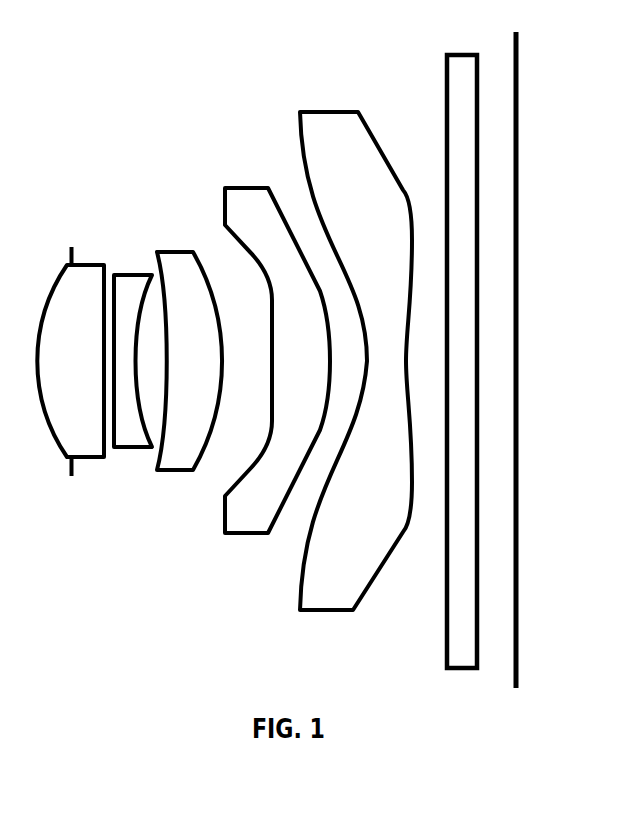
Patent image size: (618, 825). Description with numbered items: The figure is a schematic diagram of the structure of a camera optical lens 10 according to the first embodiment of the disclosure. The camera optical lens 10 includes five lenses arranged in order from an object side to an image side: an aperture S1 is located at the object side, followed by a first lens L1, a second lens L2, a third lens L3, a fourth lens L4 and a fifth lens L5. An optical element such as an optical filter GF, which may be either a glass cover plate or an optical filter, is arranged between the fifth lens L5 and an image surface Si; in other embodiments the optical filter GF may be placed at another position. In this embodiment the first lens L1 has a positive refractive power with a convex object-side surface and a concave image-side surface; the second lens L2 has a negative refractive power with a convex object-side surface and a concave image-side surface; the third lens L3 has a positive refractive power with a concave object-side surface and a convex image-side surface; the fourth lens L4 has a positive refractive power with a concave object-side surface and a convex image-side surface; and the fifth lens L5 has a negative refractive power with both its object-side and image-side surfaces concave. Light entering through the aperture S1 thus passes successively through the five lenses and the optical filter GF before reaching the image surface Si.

The camera optical lens 10 is at (284, 345).
The aperture S1 is at (70, 350).
The first lens L1 is at (73, 349).
The second lens L2 is at (133, 348).
The third lens L3 is at (189, 348).
The fourth lens L4 is at (277, 348).
The fifth lens L5 is at (356, 345).
The optical filter GF is at (462, 348).
The image surface Si is at (521, 348).